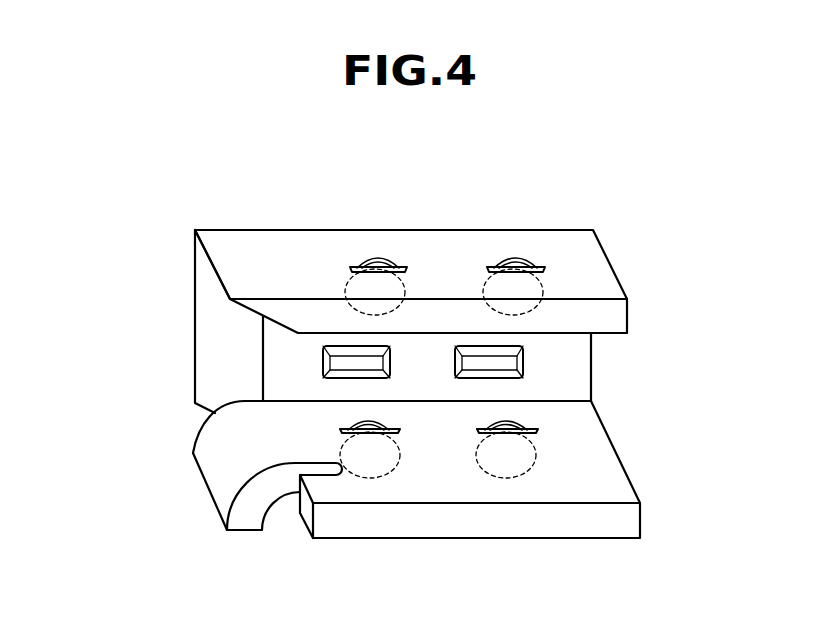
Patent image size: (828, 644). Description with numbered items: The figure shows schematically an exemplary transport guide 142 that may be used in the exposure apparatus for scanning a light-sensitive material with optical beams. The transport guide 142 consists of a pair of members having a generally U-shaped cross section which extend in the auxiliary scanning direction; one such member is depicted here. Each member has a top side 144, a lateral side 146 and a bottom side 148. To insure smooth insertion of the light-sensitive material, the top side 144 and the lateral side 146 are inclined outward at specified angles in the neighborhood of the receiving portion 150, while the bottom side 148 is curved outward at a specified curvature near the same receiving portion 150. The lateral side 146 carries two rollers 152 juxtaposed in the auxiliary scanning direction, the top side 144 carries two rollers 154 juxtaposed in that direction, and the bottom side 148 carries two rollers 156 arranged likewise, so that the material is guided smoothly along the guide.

The transport guide 142 is at (387, 348).
The top side 144 is at (413, 250).
The lateral side 146 is at (577, 373).
The bottom side 148 is at (600, 457).
The receiving portion 150 is at (163, 388).
The rollers 152 is at (350, 265).
The rollers 154 is at (492, 378).
The rollers 156 is at (472, 431).